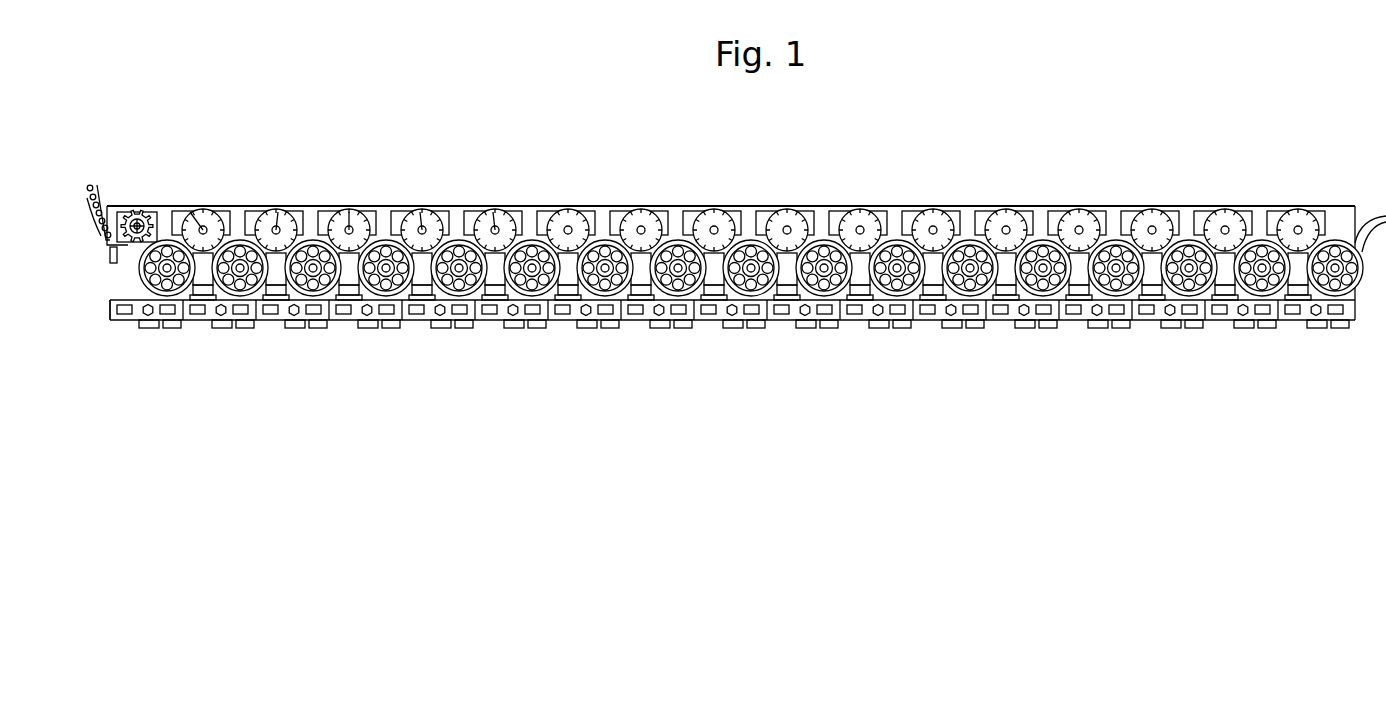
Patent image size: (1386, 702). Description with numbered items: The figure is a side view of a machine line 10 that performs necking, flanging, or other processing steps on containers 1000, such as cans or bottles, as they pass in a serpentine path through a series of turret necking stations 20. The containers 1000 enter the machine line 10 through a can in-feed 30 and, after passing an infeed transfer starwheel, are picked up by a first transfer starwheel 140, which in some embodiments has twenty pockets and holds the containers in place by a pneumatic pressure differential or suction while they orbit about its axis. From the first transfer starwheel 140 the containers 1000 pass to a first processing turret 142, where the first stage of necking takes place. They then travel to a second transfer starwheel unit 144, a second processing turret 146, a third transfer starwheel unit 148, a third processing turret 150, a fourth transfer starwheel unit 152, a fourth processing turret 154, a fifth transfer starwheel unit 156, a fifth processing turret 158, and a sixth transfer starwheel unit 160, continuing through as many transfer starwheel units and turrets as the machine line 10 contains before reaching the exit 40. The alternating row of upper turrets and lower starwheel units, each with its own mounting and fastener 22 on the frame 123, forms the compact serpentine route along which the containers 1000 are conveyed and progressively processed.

The machine line 10 is at (388, 156).
The turret necking station 20 is at (240, 315).
The roller 22 is at (512, 290).
The can in-feed 30 is at (90, 186).
The exit 40 is at (1380, 212).
The frame 123 is at (132, 255).
The first transfer starwheel 140 is at (148, 290).
The first processing turret 142 is at (203, 230).
The second transfer starwheel unit 144 is at (220, 290).
The second processing turret 146 is at (276, 230).
The third transfer starwheel unit 148 is at (293, 290).
The third processing turret 150 is at (349, 230).
The fourth transfer starwheel unit 152 is at (366, 290).
The fourth processing turret 154 is at (422, 230).
The fifth transfer starwheel unit 156 is at (484, 284).
The fifth processing turret 158 is at (495, 230).
The sixth transfer starwheel unit 160 is at (585, 290).
The container 1000 is at (100, 205).